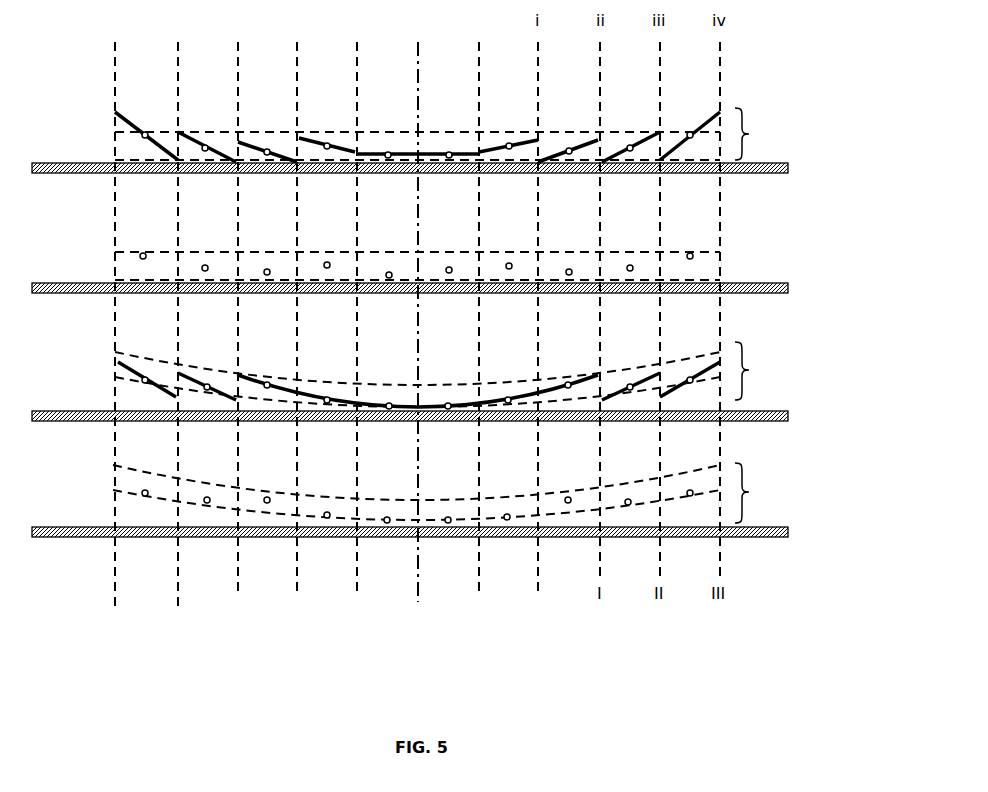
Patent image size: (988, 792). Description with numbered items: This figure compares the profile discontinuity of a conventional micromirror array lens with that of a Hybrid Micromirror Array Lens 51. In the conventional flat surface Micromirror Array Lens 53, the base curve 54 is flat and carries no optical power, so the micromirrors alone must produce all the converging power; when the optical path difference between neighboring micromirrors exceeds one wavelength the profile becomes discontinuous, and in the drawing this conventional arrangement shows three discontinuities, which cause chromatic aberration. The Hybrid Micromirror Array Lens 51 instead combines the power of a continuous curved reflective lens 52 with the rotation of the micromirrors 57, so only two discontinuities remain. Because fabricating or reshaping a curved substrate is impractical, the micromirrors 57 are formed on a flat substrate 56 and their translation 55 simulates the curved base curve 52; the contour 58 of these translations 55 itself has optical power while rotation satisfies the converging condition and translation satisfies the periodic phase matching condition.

The Hybrid Micromirror Array Lens 51 is at (755, 367).
The continuous reflective lens (curved base curve with power) 52 is at (158, 473).
The conventional flat surface Micromirror Array Lens 53 is at (750, 128).
The base curve 54 is at (158, 250).
The translation 55 is at (491, 566).
The flat substrate 56 is at (793, 282).
The micromirror 57 is at (253, 376).
The contour of the translations 58 is at (756, 492).